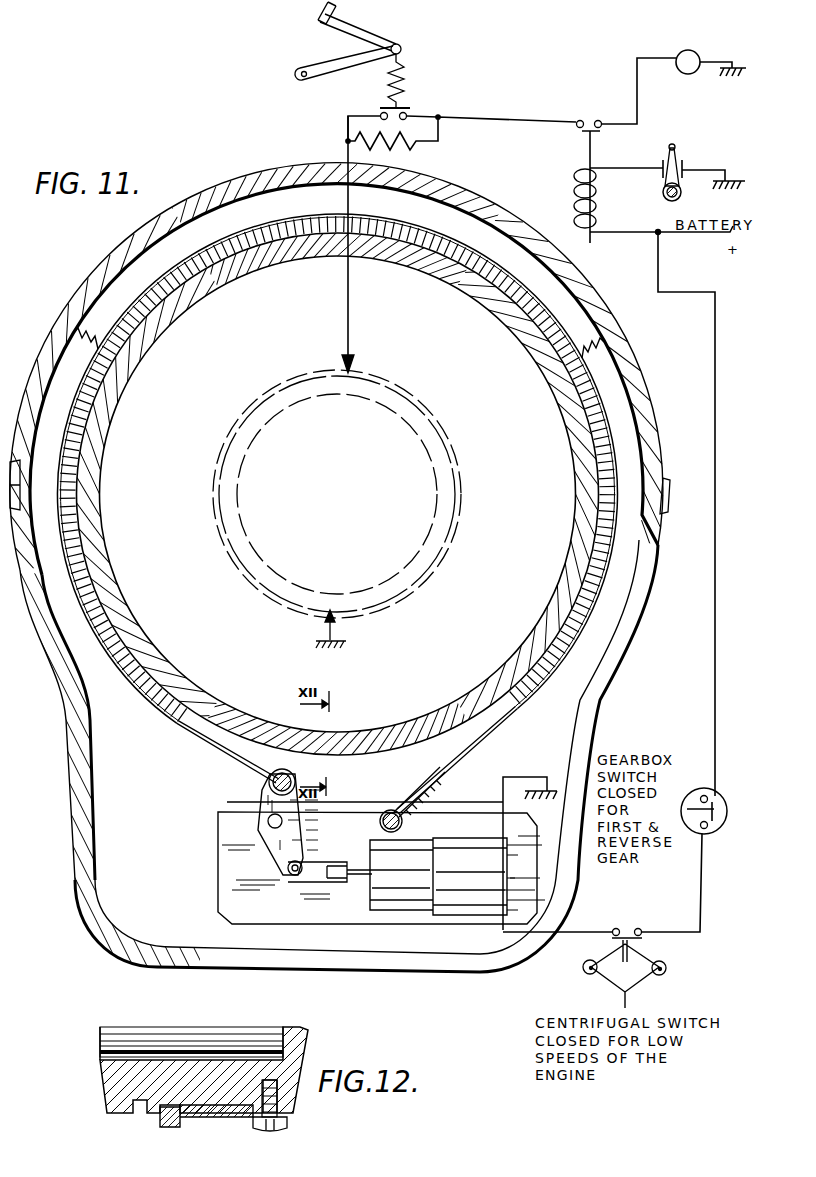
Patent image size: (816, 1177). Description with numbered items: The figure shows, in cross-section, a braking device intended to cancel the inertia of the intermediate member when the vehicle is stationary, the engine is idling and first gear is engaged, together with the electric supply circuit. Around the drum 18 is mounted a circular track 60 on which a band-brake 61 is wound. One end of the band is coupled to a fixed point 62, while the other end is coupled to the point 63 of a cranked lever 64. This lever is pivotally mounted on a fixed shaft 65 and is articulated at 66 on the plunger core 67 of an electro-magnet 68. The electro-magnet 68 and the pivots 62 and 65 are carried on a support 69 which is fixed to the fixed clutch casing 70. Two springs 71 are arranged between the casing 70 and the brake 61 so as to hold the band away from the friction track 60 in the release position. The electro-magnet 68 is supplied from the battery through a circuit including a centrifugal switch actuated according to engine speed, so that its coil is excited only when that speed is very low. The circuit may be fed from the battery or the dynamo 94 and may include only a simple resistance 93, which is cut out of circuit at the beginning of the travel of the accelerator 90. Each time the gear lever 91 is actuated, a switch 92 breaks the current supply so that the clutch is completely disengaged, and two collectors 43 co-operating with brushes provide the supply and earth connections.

In FIG. 11, the drum 18 is at (99, 440).
In FIG. 12, the drum 18 is at (110, 1098).
In FIG. 11, the collectors 43 is at (455, 470).
In FIG. 11, the circular track 60 is at (74, 428).
In FIG. 12, the circular track 60 is at (232, 1120).
In FIG. 11, the band-brake 61 is at (58, 476).
In FIG. 11, the fixed point 62 is at (390, 810).
In FIG. 11, the point of the cranked lever 63 is at (268, 783).
In FIG. 11, the cranked lever 64 is at (300, 835).
In FIG. 11, the fixed shaft 65 is at (268, 822).
In FIG. 11, the articulation 66 is at (288, 872).
In FIG. 11, the plunger core 67 is at (358, 876).
In FIG. 11, the electro-magnet 68 is at (475, 858).
In FIG. 11, the support 69 is at (222, 905).
In FIG. 11, the fixed clutch casing 70 is at (414, 968).
In FIG. 11, the springs 71 is at (90, 333).
In FIG. 11, the accelerator 90 is at (400, 46).
In FIG. 11, the gear lever 91 is at (664, 160).
In FIG. 11, the switch 92 is at (575, 212).
In FIG. 11, the resistance 93 is at (420, 150).
In FIG. 11, the dynamo 94 is at (686, 74).